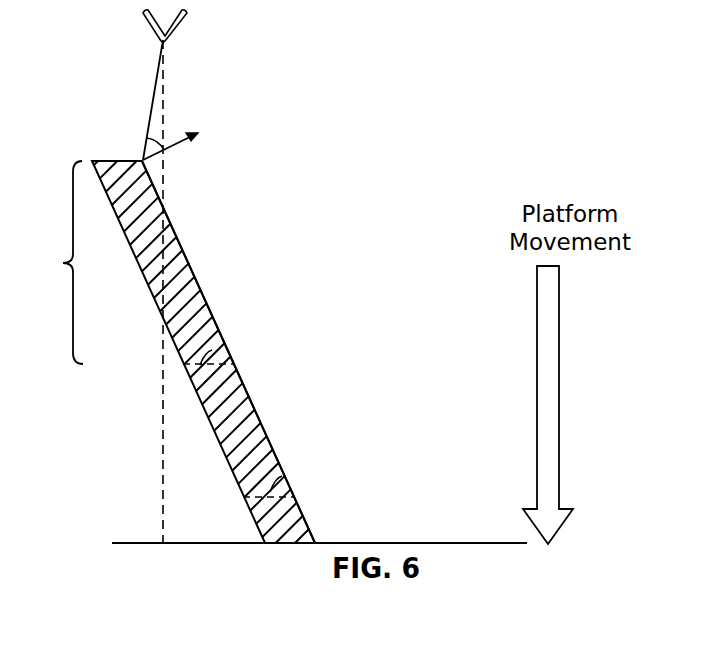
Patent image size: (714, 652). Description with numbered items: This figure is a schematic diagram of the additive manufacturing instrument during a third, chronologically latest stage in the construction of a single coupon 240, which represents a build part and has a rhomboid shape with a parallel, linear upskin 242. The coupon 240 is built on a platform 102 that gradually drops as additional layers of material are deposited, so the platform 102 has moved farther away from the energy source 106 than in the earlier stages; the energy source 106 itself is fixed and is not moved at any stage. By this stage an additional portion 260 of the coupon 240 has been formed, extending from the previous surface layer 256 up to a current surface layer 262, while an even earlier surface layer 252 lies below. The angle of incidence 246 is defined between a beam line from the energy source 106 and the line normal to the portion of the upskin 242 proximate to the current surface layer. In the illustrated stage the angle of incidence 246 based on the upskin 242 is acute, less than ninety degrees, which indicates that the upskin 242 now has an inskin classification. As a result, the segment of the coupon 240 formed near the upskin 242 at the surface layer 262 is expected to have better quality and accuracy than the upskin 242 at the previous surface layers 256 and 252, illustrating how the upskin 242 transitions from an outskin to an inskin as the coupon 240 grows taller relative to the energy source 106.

The platform 102 is at (133, 543).
The energy source 106 is at (178, 22).
The coupon 240 is at (193, 297).
The upskin 242 is at (180, 242).
The angle of incidence 246 is at (157, 140).
The surface layer 252 is at (277, 477).
The previous surface layer 256 is at (208, 356).
The additional portion 260 is at (49, 262).
The current surface layer 262 is at (122, 159).